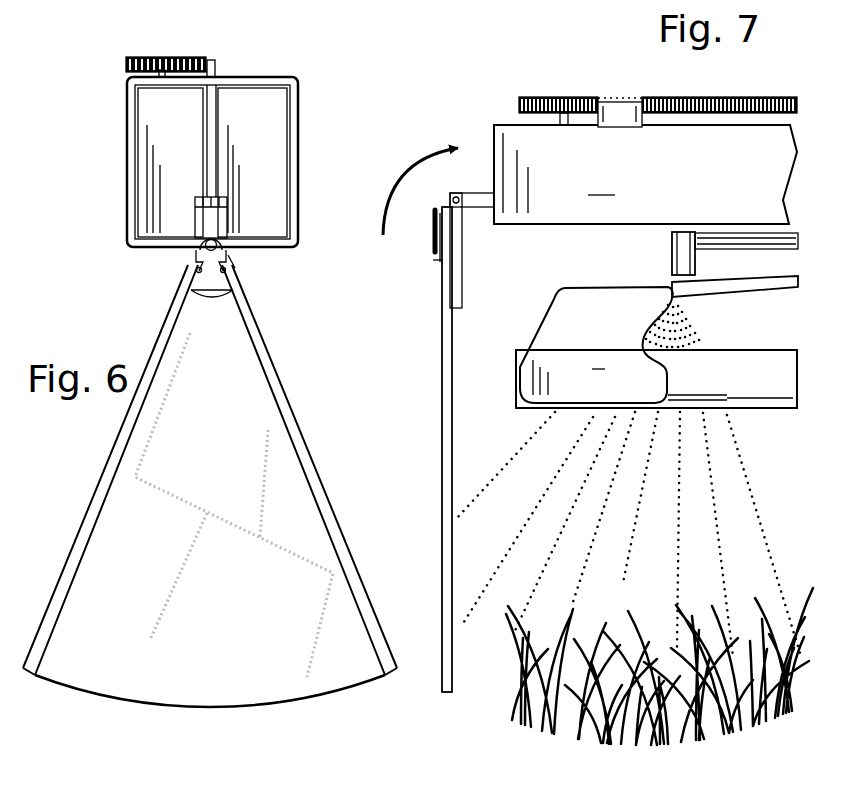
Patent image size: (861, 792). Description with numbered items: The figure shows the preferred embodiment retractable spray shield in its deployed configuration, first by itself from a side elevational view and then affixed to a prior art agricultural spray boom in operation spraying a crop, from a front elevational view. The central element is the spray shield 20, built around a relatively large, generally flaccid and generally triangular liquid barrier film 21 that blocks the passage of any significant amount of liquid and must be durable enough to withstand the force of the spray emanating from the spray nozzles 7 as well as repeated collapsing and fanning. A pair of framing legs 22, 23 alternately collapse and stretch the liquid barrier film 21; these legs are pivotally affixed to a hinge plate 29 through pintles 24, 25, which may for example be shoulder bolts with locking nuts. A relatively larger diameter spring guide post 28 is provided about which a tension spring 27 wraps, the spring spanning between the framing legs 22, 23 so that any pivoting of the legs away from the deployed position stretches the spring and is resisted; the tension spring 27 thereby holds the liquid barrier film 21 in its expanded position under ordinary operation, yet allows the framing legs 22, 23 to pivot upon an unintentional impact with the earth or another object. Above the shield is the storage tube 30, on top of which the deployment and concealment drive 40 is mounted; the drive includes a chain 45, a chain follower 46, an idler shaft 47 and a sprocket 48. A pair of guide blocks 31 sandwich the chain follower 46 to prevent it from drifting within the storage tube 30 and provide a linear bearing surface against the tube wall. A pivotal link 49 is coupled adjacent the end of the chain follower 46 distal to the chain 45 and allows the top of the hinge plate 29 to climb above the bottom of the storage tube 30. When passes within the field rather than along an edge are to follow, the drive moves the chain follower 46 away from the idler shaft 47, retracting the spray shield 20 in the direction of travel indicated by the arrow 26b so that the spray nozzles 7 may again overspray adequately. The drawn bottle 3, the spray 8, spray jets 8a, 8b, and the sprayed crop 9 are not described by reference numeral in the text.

In FIG. 7, the spray bottle 3 is at (656, 347).
In FIG. 7, the spray nozzle 7 is at (683, 248).
In FIG. 7, the spray 8 is at (628, 534).
In FIG. 7, the spray jet 8a is at (477, 497).
In FIG. 7, the spray jet 8b is at (573, 445).
In FIG. 7, the plants / weeds 9 is at (520, 700).
In FIG. 6, the spray shield 20 is at (210, 486).
In FIG. 7, the spray shield 20 is at (479, 449).
In FIG. 6, the liquid barrier film 21 is at (307, 528).
In FIG. 6, the framing leg 22 is at (67, 577).
In FIG. 6, the framing leg 23 is at (303, 457).
In FIG. 7, the framing leg 23 is at (453, 442).
In FIG. 6, the pintle 24 is at (175, 285).
In FIG. 6, the pintle 25 is at (248, 287).
In FIG. 7, the pintle 25 is at (432, 260).
In FIG. 7, the arrow 26b is at (432, 147).
In FIG. 6, the tension spring 27 is at (236, 250).
In FIG. 7, the tension spring 27 is at (430, 233).
In FIG. 6, the spring guide post 28 is at (193, 247).
In FIG. 7, the spring guide post 28 is at (448, 208).
In FIG. 6, the hinge plate 29 is at (228, 222).
In FIG. 7, the hinge plate 29 is at (462, 297).
In FIG. 6, the storage tube 30 is at (302, 158).
In FIG. 7, the storage tube 30 is at (645, 174).
In FIG. 6, the guide block 31 is at (145, 113).
In FIG. 7, the deployment and concealment drive 40 is at (635, 84).
In FIG. 7, the chain 45 is at (745, 97).
In FIG. 6, the chain follower 46 is at (213, 110).
In FIG. 7, the chain follower 46 is at (634, 103).
In FIG. 6, the idler shaft 47 is at (158, 73).
In FIG. 7, the idler shaft 47 is at (558, 122).
In FIG. 6, the sprocket 48 is at (127, 55).
In FIG. 7, the sprocket 48 is at (523, 97).
In FIG. 7, the pivotal link 49 is at (480, 200).